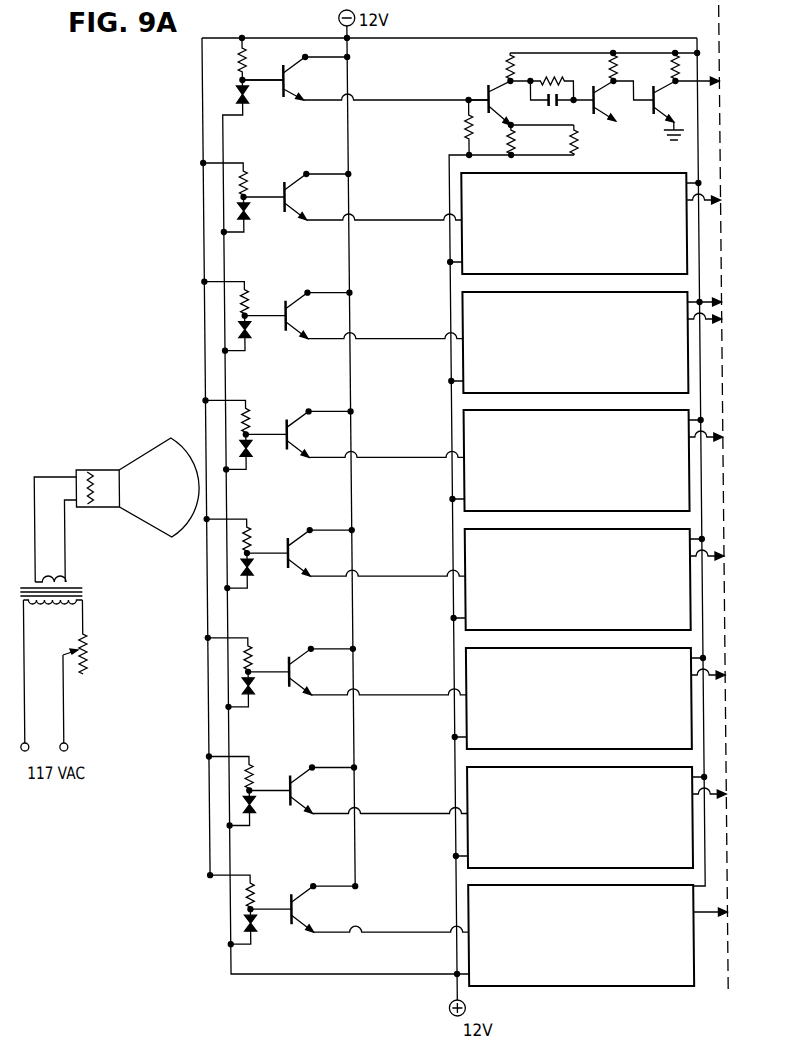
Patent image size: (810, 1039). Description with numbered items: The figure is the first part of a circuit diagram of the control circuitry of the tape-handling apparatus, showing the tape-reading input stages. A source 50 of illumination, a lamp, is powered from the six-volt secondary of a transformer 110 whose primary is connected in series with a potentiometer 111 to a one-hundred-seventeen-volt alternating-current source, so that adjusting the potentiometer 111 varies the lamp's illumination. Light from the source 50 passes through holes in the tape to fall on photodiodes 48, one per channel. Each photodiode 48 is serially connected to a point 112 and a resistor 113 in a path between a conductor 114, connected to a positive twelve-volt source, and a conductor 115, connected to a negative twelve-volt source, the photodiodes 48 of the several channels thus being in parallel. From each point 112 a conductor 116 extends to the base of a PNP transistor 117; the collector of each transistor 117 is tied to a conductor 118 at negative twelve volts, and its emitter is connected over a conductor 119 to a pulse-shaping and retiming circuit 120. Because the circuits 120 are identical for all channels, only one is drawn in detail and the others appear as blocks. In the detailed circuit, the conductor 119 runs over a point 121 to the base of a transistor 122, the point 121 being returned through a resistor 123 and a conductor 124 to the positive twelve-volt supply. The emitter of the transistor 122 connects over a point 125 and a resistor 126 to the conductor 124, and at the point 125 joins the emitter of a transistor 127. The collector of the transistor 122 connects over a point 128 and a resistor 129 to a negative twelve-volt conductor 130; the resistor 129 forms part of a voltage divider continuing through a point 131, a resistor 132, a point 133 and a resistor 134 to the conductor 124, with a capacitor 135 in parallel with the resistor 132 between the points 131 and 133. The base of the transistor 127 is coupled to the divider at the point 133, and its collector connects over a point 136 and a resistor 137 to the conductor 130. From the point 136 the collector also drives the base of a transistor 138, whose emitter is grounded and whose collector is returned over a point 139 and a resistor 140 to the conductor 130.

The photodiodes 48 is at (236, 97).
The source of illumination 50 is at (140, 452).
The transformer 110 is at (78, 582).
The potentiometer 111 is at (83, 645).
The point 112 is at (240, 76).
The resistor 113 is at (247, 63).
The conductor 114 is at (222, 149).
The conductor 115 is at (202, 120).
The conductor 116 is at (255, 84).
The transistor 117 is at (286, 77).
The conductor 118 is at (349, 75).
The conductor 119 is at (334, 100).
The pulse-shaping and retiming circuit 120 is at (461, 243).
The point 121 is at (467, 98).
The transistor 122 is at (488, 88).
The resistor 123 is at (463, 124).
The conductor 124 is at (448, 202).
The point 125 is at (513, 142).
The resistor 126 is at (508, 132).
The transistor 127 is at (620, 119).
The point 128 is at (510, 62).
The resistor 129 is at (510, 38).
The conductor 130 is at (672, 52).
The point 131 is at (533, 80).
The resistor 132 is at (556, 78).
The point 133 is at (576, 106).
The resistor 134 is at (580, 143).
The capacitor 135 is at (550, 102).
The point 136 is at (617, 60).
The resistor 137 is at (608, 60).
The transistor 138 is at (650, 118).
The point 139 is at (669, 75).
The resistor 140 is at (684, 38).